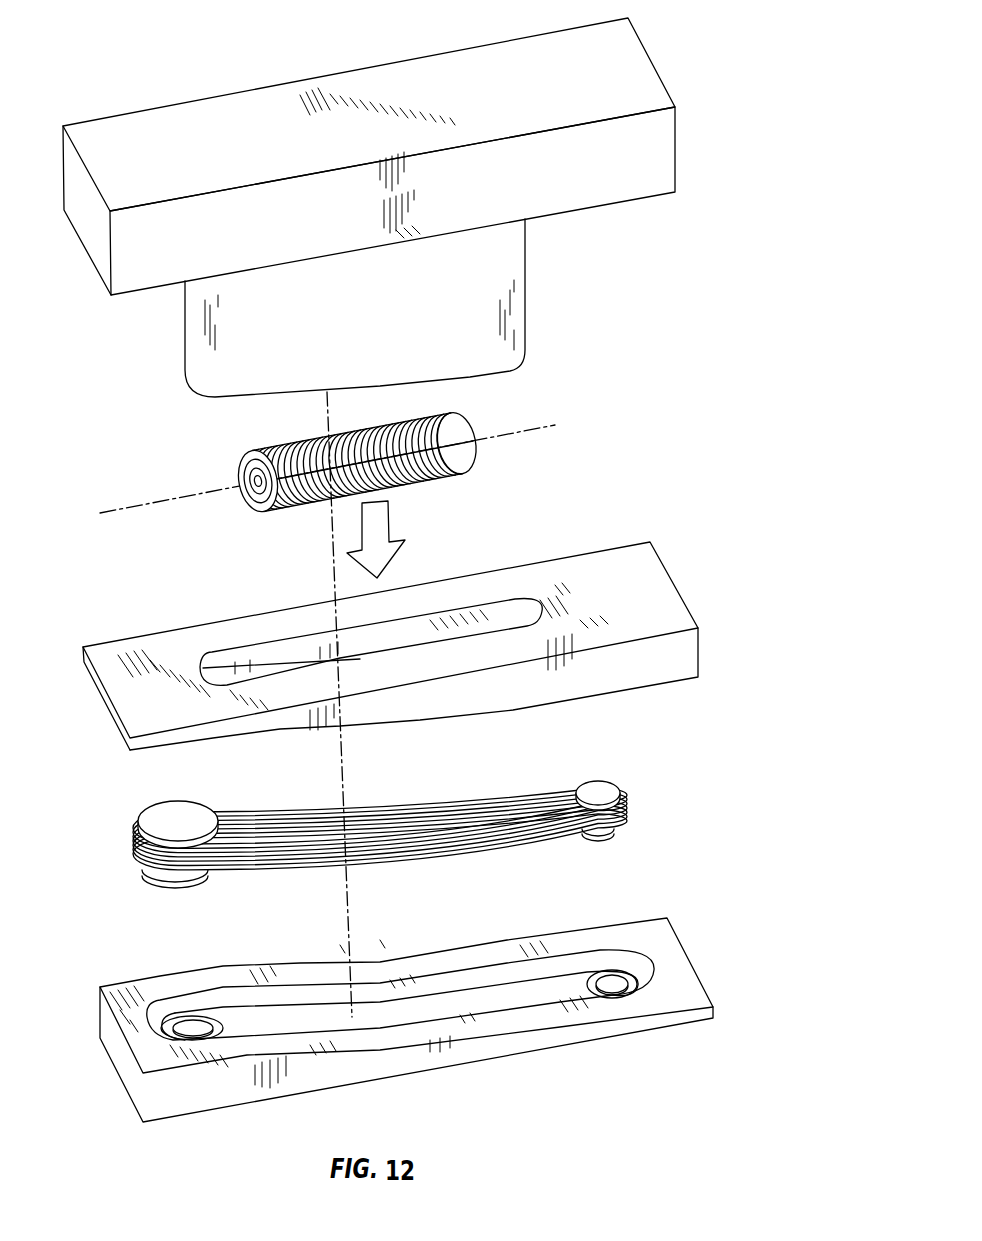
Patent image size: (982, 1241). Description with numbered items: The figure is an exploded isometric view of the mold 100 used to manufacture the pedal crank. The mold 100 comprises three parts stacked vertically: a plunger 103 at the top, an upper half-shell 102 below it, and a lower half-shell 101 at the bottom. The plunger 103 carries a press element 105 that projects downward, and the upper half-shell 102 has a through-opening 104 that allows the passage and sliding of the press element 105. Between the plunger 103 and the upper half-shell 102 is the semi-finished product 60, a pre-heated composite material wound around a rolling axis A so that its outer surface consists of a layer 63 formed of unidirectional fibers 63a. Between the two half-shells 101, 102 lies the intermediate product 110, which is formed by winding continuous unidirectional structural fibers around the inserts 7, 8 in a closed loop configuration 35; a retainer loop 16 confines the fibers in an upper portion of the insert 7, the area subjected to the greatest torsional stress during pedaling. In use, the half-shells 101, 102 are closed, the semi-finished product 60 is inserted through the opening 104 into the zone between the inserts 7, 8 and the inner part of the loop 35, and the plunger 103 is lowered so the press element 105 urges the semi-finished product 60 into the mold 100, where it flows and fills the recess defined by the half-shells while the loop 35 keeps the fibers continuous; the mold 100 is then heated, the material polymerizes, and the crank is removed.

The mold 100 is at (108, 64).
The plunger 103 is at (665, 153).
The press element 105 is at (503, 320).
The rolling axis A is at (557, 427).
The semi-finished product 60 is at (318, 454).
The layer 63 is at (387, 454).
The unidirectional fibers 63a is at (466, 420).
The upper half-shell 102 is at (424, 633).
The through-opening 104 is at (493, 618).
The intermediate product 110 is at (430, 836).
The closed loop configuration 35 is at (487, 847).
The insert 7 is at (168, 815).
The insert 8 is at (660, 812).
The retainer loop 16 is at (172, 884).
The lower half-shell 101 is at (705, 1015).